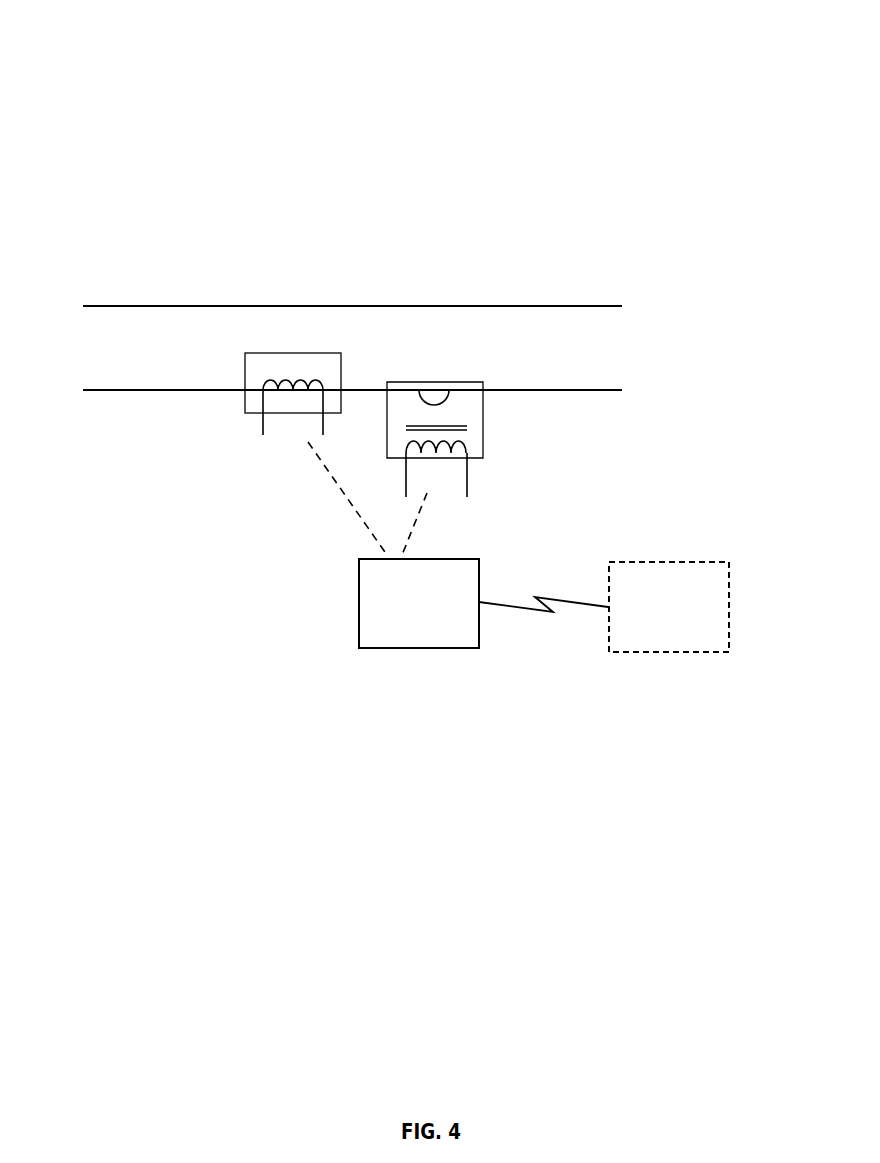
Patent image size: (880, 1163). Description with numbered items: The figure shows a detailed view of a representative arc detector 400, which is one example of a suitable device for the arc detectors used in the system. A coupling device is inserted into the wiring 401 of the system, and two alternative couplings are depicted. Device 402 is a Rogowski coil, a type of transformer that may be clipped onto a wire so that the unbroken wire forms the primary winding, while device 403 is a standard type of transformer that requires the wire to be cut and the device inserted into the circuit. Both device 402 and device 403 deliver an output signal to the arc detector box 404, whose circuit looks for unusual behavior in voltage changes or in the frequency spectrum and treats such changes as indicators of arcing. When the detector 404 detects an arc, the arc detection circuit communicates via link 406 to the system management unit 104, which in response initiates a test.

The arc detector 400 is at (711, 62).
The wiring 401 is at (135, 390).
The Rogowski coil 402 is at (323, 353).
The standard transformer 403 is at (460, 382).
The arc detector box 404 is at (450, 559).
The link 406 is at (540, 615).
The system management unit 104 is at (677, 562).